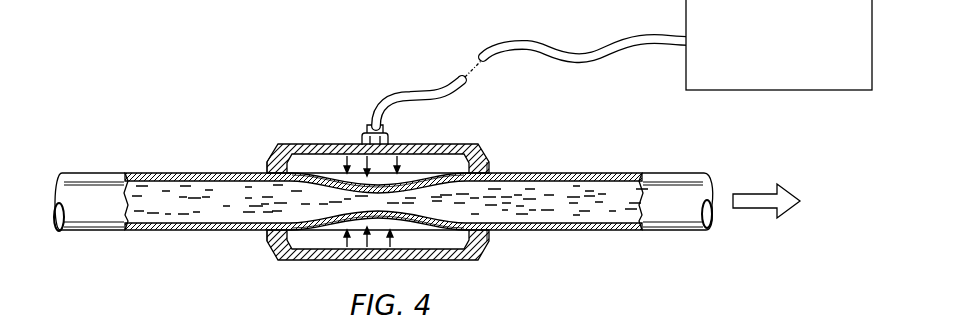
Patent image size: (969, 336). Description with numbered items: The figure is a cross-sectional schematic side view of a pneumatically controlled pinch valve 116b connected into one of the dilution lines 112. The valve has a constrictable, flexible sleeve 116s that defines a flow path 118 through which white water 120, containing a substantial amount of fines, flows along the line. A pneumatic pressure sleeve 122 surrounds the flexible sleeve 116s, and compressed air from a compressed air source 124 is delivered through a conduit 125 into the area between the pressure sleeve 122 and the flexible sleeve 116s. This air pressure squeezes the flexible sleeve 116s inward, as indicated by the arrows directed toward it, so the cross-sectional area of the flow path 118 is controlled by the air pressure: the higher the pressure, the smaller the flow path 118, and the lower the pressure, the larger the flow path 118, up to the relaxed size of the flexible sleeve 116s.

The dilution line 112 is at (186, 172).
The pneumatically controlled pinch valve 116b is at (437, 136).
The flexible sleeve 116s is at (446, 162).
The flow path 118 is at (426, 208).
The white water 120 is at (215, 212).
The pneumatic pressure sleeve 122 is at (310, 143).
The compressed air source 124 is at (770, 90).
The conduit 125 is at (450, 84).